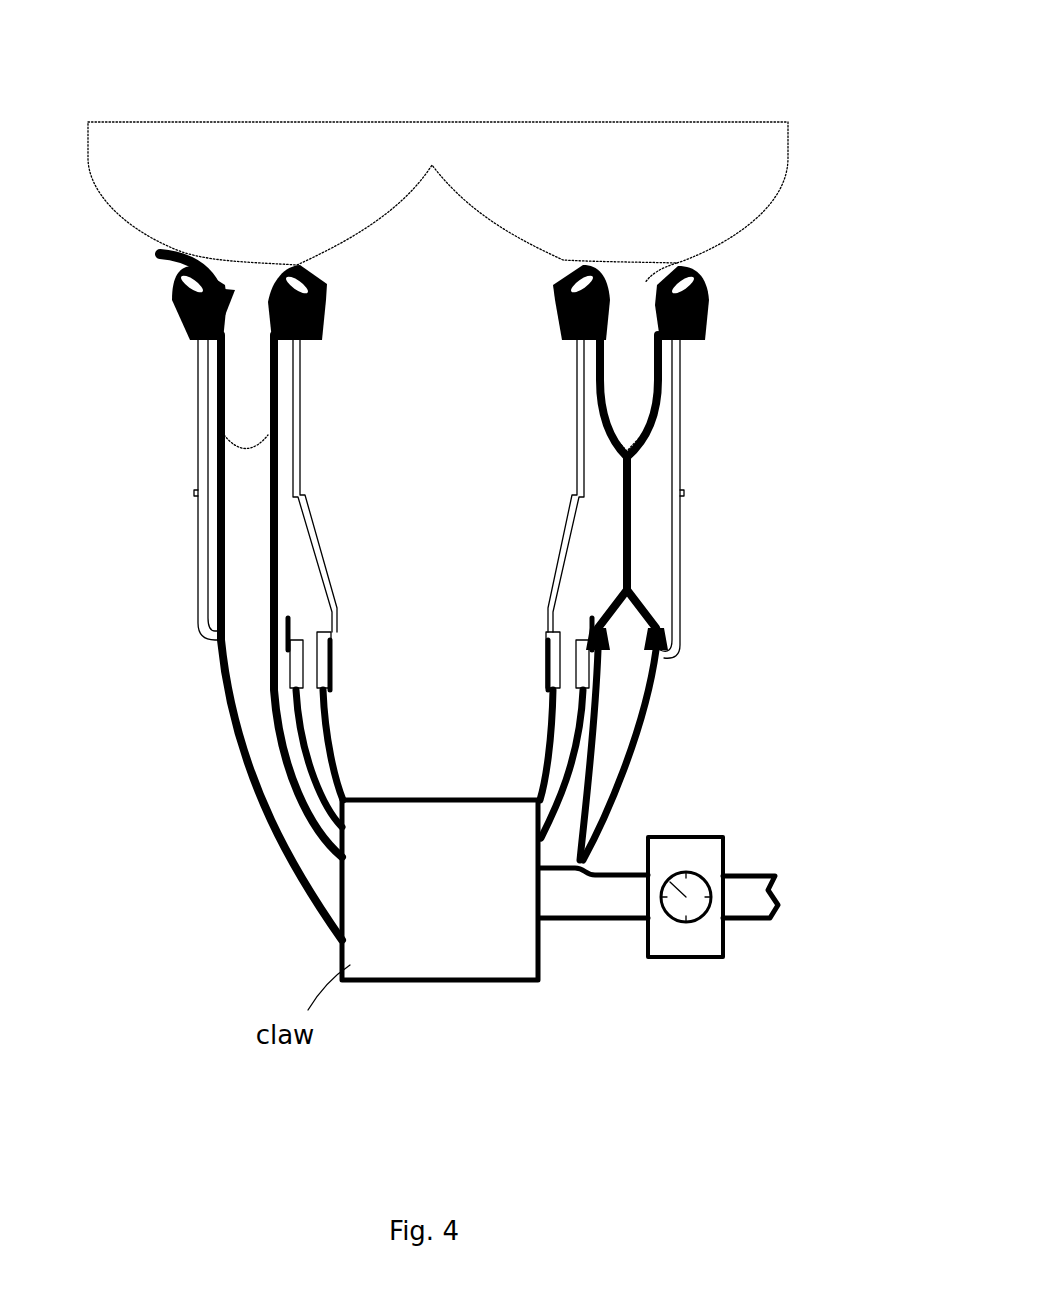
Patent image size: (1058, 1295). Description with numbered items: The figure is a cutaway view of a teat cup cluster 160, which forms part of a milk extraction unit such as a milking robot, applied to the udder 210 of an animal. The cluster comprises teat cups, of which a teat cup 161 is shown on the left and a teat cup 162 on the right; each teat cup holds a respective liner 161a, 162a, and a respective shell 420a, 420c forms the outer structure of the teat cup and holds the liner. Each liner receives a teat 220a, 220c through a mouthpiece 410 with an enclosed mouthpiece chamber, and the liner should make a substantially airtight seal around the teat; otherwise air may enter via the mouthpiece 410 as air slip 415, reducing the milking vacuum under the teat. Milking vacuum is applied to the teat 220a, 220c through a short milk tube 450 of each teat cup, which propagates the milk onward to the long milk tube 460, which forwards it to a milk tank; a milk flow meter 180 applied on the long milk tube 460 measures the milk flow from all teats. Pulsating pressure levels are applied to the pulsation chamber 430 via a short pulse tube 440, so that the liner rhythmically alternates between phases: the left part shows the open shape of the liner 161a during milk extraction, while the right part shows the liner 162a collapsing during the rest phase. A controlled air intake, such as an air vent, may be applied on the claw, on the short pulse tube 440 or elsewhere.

The teat cup cluster 160 is at (855, 66).
The udder 210 is at (432, 148).
The air slip 415 is at (162, 255).
The mouthpiece 410 is at (680, 262).
The teat 220a is at (235, 366).
The teat 220c is at (635, 357).
The shell 420a is at (197, 420).
The shell 420c is at (680, 455).
The teat cup 161 is at (197, 493).
The liner 161a is at (225, 580).
The teat cup 162 is at (680, 495).
The liner 162a is at (633, 543).
The pulsation chamber 430 is at (650, 585).
The short pulse tube 440 is at (318, 745).
The short milk tube 450 is at (610, 717).
The long milk tube 460 is at (572, 905).
The milk flow meter 180 is at (682, 945).